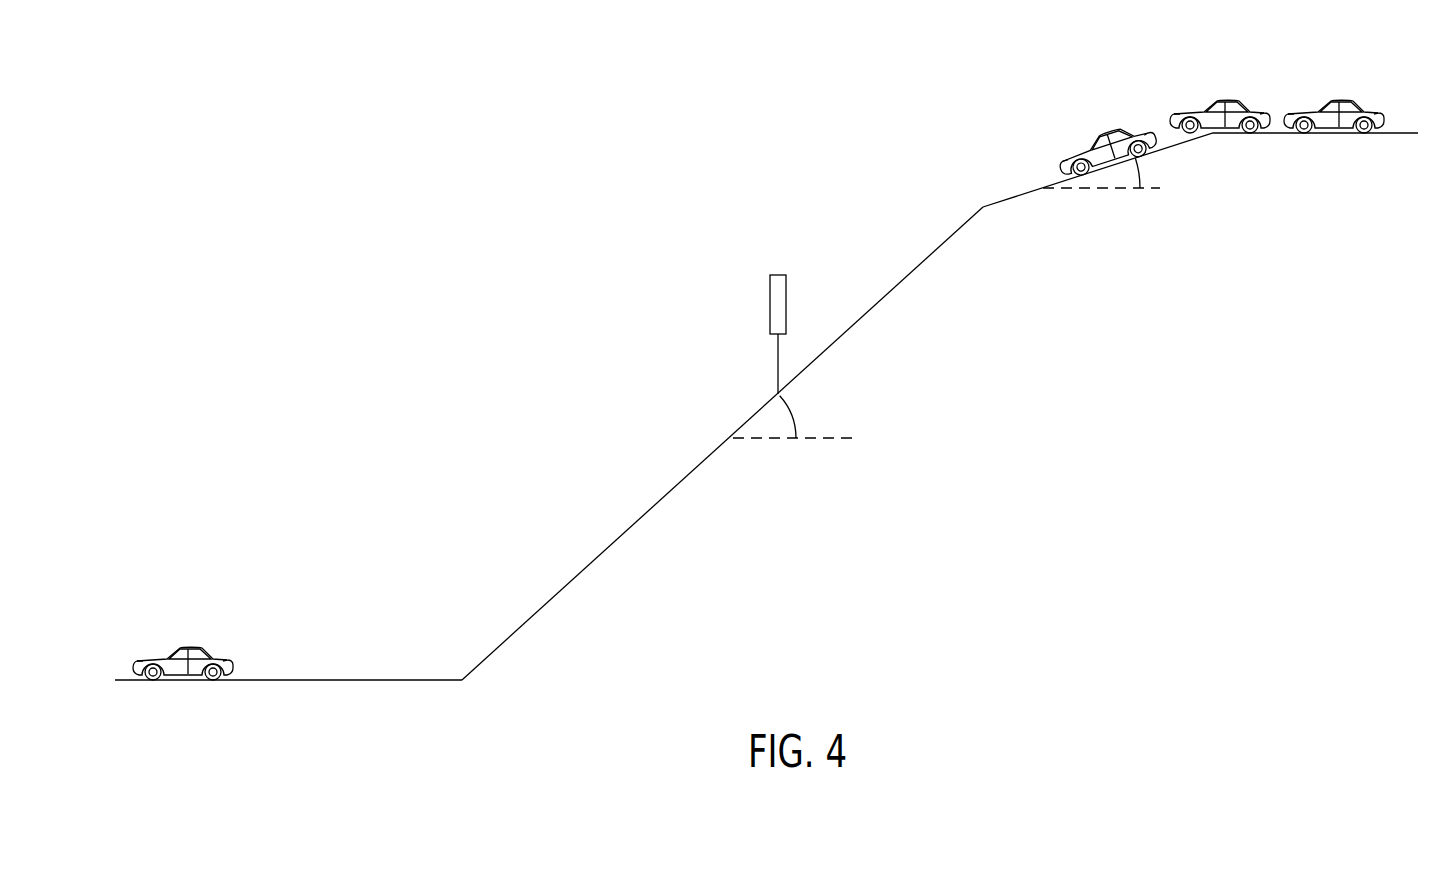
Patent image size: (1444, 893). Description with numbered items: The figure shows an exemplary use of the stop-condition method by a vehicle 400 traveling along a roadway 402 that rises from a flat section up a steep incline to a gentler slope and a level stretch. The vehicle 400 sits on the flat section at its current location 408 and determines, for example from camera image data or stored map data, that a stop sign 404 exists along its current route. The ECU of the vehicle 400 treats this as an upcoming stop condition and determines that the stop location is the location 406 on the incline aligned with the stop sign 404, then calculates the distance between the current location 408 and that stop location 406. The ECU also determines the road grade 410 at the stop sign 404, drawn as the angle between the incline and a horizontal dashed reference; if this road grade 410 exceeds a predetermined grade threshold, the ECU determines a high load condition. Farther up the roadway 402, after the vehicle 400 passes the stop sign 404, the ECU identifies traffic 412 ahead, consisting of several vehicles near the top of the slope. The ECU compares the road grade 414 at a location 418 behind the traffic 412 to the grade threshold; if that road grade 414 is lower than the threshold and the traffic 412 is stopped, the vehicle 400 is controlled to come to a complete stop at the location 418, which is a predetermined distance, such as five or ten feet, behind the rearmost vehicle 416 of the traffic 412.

The vehicle 400 is at (182, 650).
The roadway 402 is at (428, 683).
The stop sign 404 is at (770, 300).
The location 406 is at (778, 394).
The current location 408 is at (230, 683).
The road grade 410 is at (787, 417).
The traffic 412 is at (1112, 100).
The road grade 414 is at (1133, 162).
The vehicle 416 is at (1080, 145).
The location 418 is at (1040, 188).